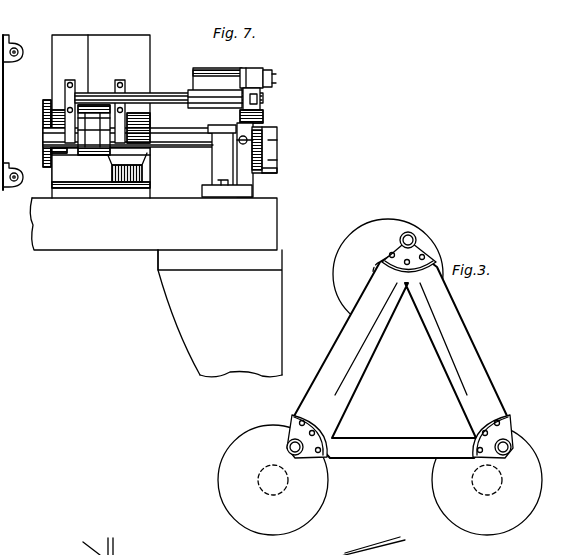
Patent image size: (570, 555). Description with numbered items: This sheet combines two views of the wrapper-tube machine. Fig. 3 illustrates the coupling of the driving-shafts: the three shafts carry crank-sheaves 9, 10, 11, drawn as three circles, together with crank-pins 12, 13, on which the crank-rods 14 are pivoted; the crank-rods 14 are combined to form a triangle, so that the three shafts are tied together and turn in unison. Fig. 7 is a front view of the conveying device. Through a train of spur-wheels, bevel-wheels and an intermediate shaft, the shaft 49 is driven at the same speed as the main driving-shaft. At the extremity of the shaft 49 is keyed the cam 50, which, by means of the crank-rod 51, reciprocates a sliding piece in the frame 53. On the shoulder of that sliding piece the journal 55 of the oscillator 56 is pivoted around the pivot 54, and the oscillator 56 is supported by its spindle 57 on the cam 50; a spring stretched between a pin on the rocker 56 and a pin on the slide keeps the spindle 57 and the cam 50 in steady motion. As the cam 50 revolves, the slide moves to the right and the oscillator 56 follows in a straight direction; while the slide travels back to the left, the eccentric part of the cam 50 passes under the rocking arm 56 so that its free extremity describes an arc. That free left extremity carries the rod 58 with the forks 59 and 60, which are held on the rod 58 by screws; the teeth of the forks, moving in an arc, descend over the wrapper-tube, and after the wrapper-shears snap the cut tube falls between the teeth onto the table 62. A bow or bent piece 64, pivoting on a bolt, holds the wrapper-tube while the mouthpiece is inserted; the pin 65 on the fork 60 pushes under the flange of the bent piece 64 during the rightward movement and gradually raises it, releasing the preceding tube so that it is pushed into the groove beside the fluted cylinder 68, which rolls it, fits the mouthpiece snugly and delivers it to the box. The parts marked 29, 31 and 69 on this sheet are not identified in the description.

In FIG. 3, the crank-sheave 9 is at (313, 482).
In FIG. 3, the crank-sheave 10 is at (447, 480).
In FIG. 3, the crank-sheave 11 is at (352, 245).
In FIG. 3, the crank-pin 12 is at (411, 238).
In FIG. 3, the crank-pin 13 is at (287, 448).
In FIG. 3, the crank-rods 14 is at (340, 367).
In FIG. 3, the bracket 29 is at (402, 550).
In FIG. 3, the arm 31 is at (82, 544).
In FIG. 7, the shaft 49 is at (180, 140).
In FIG. 7, the cam 50 is at (263, 172).
In FIG. 7, the crank-rod 51 is at (277, 152).
In FIG. 7, the frame 53 is at (245, 185).
In FIG. 7, the pivot 54 is at (273, 80).
In FIG. 7, the journal 55 is at (222, 72).
In FIG. 7, the oscillator 56 is at (247, 102).
In FIG. 7, the spindle 57 is at (265, 118).
In FIG. 7, the rod 58 is at (167, 98).
In FIG. 7, the fork 59 is at (118, 82).
In FIG. 7, the fork 60 is at (68, 88).
In FIG. 7, the table 62 is at (162, 148).
In FIG. 7, the bow or bent piece 64 is at (112, 80).
In FIG. 7, the pin 65 is at (78, 125).
In FIG. 7, the cylinder 68 is at (45, 105).
In FIG. 7, the frame block 69 is at (101, 168).